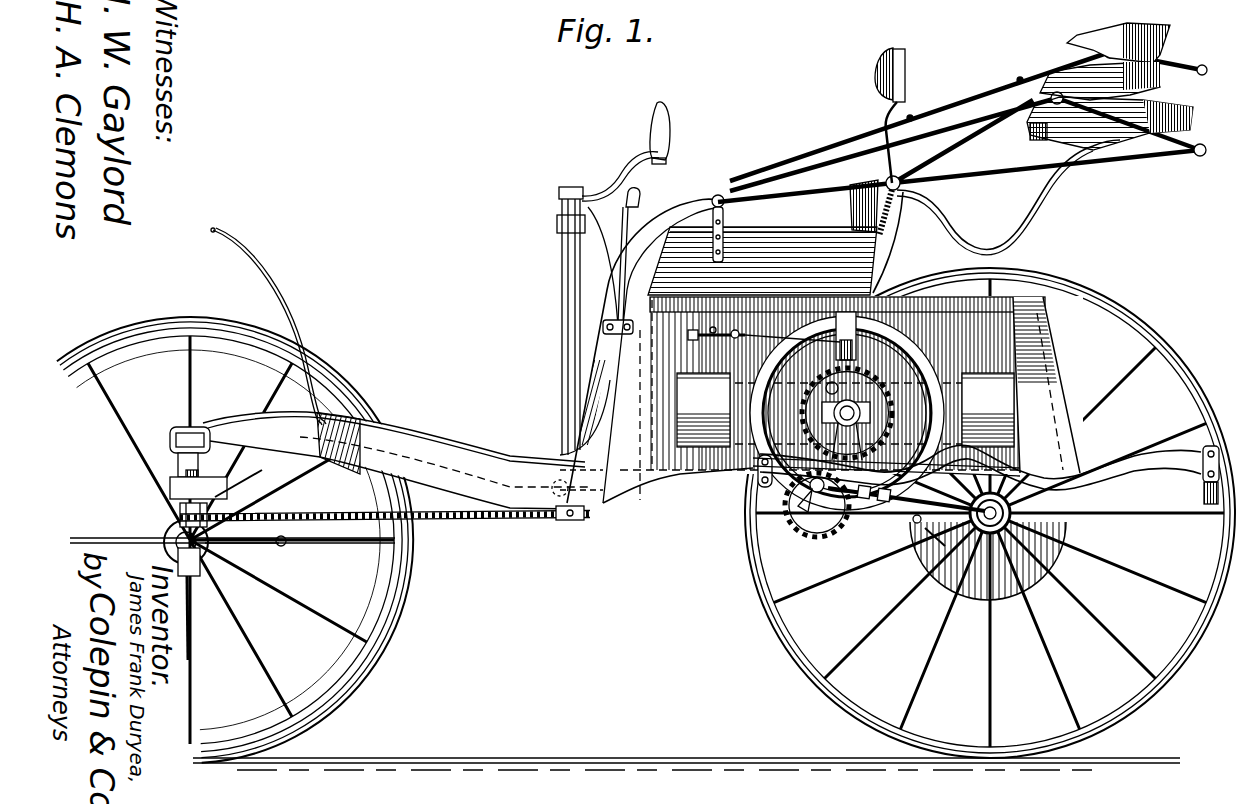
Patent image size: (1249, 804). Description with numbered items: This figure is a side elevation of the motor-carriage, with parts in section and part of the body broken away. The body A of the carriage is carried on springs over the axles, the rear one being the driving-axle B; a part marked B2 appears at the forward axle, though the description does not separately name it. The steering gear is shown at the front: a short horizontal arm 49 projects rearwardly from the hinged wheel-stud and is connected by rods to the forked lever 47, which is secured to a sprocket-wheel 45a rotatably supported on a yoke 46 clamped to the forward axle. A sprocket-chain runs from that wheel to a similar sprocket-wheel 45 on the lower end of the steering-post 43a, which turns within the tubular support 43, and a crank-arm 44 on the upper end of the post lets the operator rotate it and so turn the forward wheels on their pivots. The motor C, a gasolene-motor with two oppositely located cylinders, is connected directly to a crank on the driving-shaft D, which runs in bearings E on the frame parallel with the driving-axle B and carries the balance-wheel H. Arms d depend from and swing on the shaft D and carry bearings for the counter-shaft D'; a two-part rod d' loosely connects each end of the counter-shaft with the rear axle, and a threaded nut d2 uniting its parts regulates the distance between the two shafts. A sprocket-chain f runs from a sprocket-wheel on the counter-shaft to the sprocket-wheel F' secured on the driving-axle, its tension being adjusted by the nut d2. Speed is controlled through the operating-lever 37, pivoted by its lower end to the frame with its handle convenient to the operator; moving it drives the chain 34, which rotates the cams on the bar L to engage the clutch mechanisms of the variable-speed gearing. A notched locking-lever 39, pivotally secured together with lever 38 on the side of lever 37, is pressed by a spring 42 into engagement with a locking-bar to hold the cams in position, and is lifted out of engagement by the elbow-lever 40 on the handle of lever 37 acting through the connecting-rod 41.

The body A is at (1060, 283).
The driving-axle B is at (174, 486).
The steering knuckle B2 is at (180, 455).
The motor C is at (845, 410).
The driving-shaft D is at (985, 216).
The counter-shaft D' is at (753, 516).
The bearings E is at (835, 418).
The sprocket-wheel F' is at (1010, 561).
The balance-wheel H is at (850, 386).
The bar L is at (830, 337).
The arms d is at (763, 531).
The rod d' is at (868, 568).
The threaded nut d2 is at (850, 520).
The sprocket-chain f is at (933, 537).
The chain 34 is at (740, 335).
The operating-lever 37 is at (600, 350).
The lever 38 is at (713, 327).
The notched locking-lever 39 is at (603, 326).
The elbow-lever 40 is at (618, 202).
The connecting-rod 41 is at (613, 239).
The spring 42 is at (641, 203).
The tubular support 43 is at (569, 281).
The steering-post 43a is at (576, 520).
The crank-arm 44 is at (639, 154).
The sprocket-wheel 45 is at (561, 518).
The sprocket-wheel 45a is at (215, 514).
The yoke 46 is at (230, 475).
The forked lever 47 is at (278, 544).
The short horizontal arm 49 is at (232, 553).